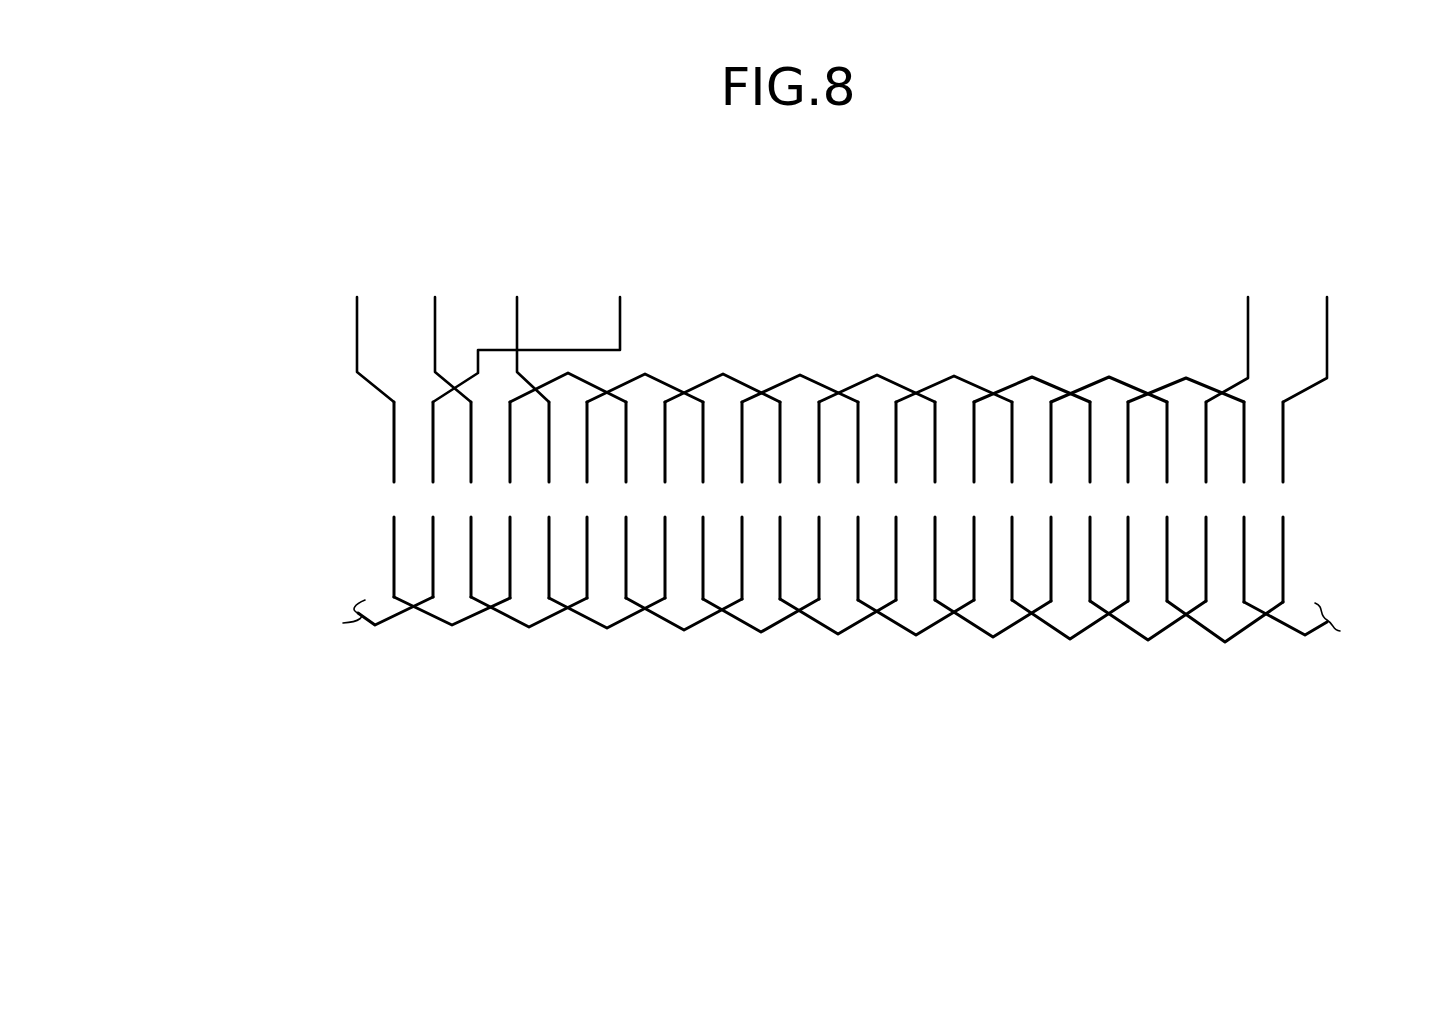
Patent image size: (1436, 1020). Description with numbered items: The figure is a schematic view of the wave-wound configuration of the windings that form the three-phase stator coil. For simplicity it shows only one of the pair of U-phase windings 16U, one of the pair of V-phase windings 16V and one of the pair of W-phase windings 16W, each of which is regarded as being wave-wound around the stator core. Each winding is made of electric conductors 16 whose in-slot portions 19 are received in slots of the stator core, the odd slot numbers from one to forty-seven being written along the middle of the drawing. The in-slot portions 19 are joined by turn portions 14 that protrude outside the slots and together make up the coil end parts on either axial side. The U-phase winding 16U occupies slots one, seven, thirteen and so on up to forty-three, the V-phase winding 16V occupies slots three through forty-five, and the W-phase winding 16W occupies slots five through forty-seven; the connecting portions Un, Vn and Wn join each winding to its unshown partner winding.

The turn portions 14 is at (1344, 335).
The in-slot portions 19 is at (1344, 410).
The electric conductors 16 is at (350, 475).
The U-phase winding 16U is at (357, 333).
The V-phase winding 16V is at (517, 333).
The W-phase winding 16W is at (433, 333).